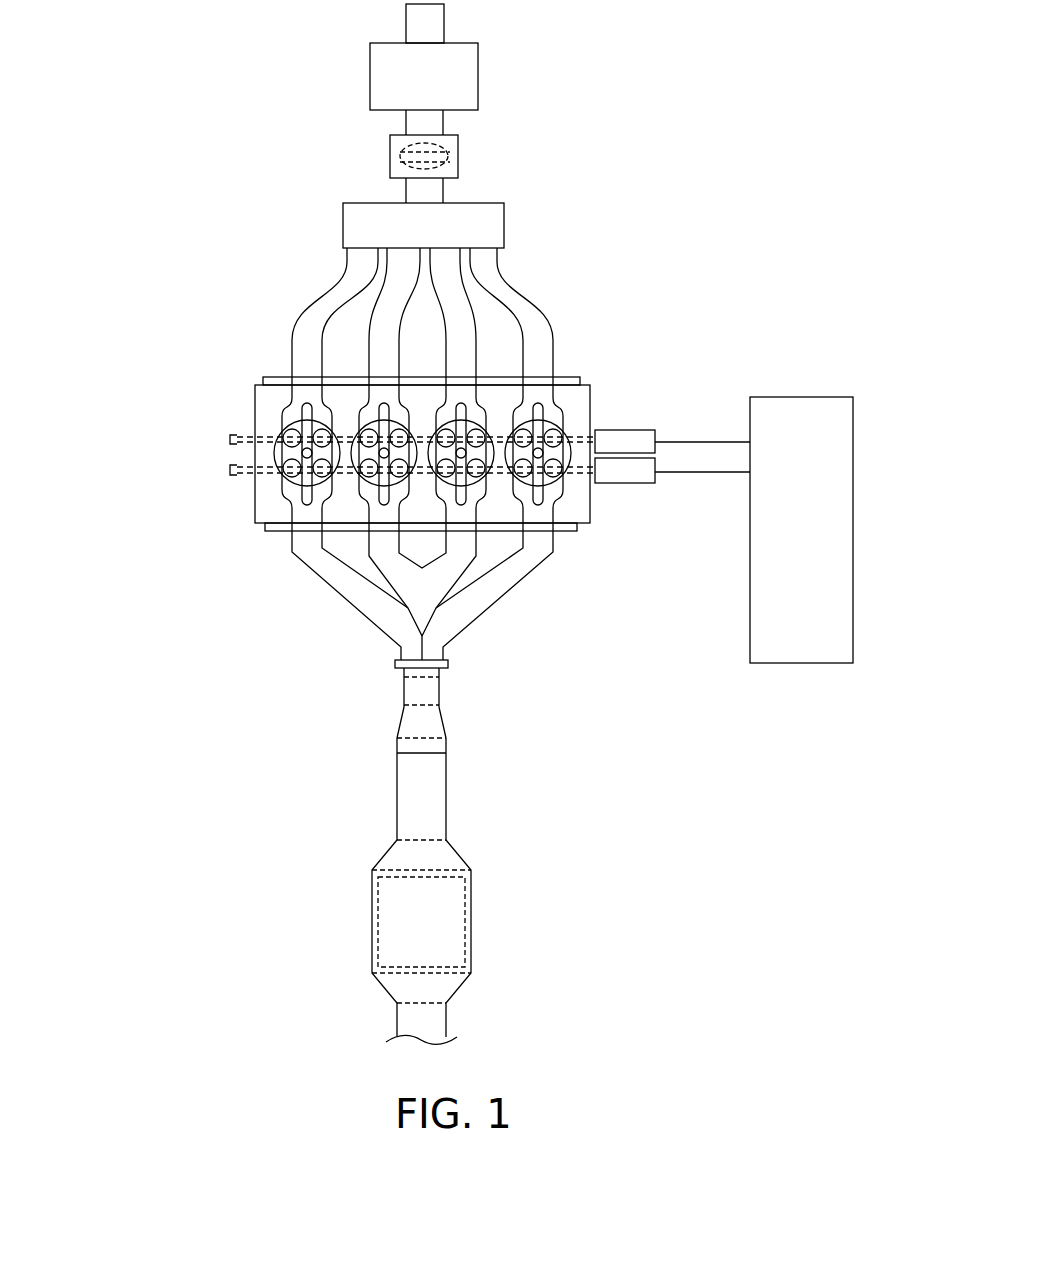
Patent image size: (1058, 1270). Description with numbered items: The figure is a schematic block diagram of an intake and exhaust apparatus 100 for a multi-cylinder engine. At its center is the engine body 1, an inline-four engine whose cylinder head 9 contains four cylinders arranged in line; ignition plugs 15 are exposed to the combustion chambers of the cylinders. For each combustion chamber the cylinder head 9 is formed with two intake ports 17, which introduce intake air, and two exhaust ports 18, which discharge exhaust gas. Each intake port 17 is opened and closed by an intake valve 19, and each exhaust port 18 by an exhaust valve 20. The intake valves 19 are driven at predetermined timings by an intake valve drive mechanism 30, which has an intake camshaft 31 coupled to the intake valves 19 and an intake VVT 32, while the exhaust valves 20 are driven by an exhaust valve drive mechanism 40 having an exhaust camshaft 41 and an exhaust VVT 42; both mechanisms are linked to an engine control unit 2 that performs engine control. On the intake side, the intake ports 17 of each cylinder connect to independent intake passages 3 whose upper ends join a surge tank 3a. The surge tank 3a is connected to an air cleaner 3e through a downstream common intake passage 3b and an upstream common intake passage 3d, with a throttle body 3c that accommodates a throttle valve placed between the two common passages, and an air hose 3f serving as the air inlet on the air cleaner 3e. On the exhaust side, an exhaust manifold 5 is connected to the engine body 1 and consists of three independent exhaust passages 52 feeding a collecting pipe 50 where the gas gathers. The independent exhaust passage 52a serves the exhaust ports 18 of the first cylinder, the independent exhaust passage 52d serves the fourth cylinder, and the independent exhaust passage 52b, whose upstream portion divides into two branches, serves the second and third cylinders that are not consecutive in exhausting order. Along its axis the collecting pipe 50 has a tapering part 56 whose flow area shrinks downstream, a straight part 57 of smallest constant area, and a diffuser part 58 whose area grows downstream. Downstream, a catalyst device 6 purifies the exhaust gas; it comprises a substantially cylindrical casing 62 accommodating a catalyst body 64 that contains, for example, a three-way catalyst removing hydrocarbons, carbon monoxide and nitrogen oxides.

The engine body 1 is at (421, 457).
The engine control unit (ECU) 2 is at (797, 397).
The independent intake passages 3 is at (372, 345).
The surge tank 3a is at (495, 228).
The downstream common intake passage 3b is at (415, 192).
The throttle body 3c is at (395, 143).
The upstream common intake passage 3d is at (415, 122).
The air cleaner 3e is at (380, 78).
The air hose 3f is at (412, 20).
The exhaust manifold 5 is at (432, 787).
The catalyst device 6 is at (449, 942).
The cylinder head 9 is at (582, 405).
The ignition plugs 15 is at (371, 457).
The intake ports 17 is at (302, 406).
The exhaust ports 18 is at (302, 500).
The intake valve 19 is at (298, 446).
The exhaust valve 20 is at (298, 462).
The intake valve drive mechanism 30 is at (461, 408).
The intake camshaft 31 is at (230, 437).
The intake variable valve timing (VVT) 32 is at (641, 430).
The exhaust valve drive mechanism 40 is at (461, 506).
The exhaust camshaft 41 is at (230, 471).
The exhaust VVT 42 is at (645, 485).
The collecting pipe 50 is at (415, 703).
The independent exhaust passages 52 is at (426, 595).
The independent exhaust passage 52a is at (527, 572).
The independent exhaust passage 52b is at (430, 608).
The independent exhaust passage 52d is at (340, 597).
The tapering part 56 is at (441, 664).
The straight part 57 is at (438, 690).
The diffuser part 58 is at (441, 720).
The casing 62 is at (467, 898).
The catalyst body 64 is at (400, 940).
The intake and exhaust apparatus 100 is at (708, 339).